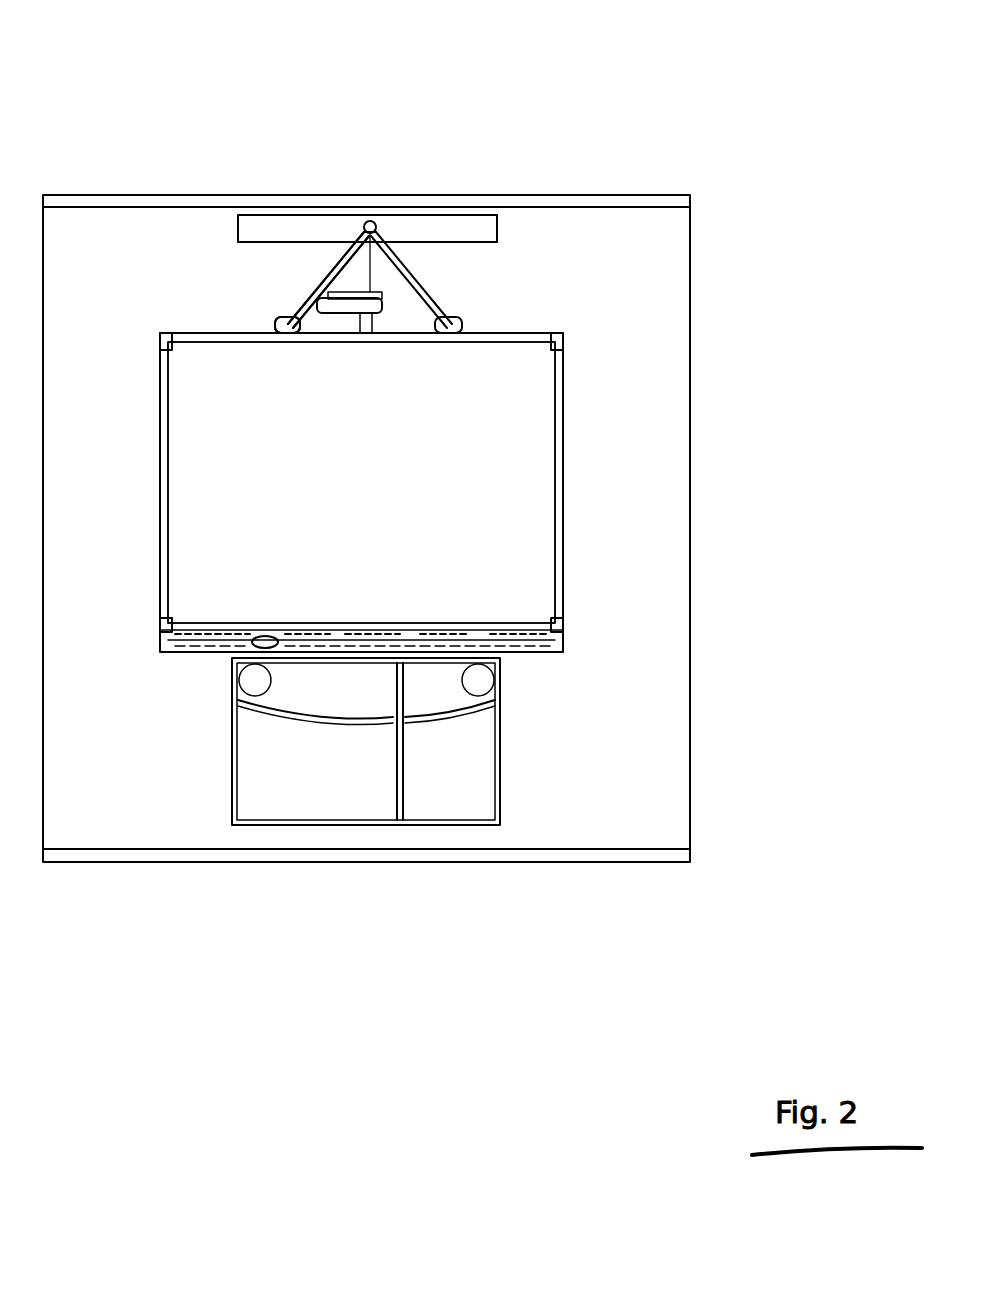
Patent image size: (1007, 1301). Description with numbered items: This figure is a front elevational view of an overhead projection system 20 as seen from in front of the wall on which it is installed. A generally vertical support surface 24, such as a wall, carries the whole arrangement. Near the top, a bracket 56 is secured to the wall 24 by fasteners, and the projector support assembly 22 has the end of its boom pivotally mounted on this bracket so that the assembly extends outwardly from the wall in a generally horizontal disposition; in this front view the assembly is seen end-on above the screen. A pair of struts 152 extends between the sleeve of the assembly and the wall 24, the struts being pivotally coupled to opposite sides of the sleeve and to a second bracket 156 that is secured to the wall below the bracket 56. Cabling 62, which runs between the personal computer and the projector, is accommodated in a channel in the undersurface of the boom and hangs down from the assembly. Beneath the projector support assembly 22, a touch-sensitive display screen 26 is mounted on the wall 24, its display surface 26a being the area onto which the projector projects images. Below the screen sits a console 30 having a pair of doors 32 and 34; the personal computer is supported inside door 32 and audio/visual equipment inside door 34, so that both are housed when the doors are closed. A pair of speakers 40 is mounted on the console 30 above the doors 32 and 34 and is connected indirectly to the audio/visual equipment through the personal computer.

The overhead projection system 20 is at (503, 139).
The projector support assembly 22 is at (457, 287).
The support surface 24 is at (672, 562).
The touch-sensitive display screen 26 is at (568, 456).
The display surface 26a is at (400, 482).
The console 30 is at (243, 828).
The door 32 is at (250, 752).
The door 34 is at (472, 766).
The speakers 40 is at (258, 683).
The bracket 56 is at (479, 226).
The cabling 62 is at (374, 333).
The struts 152 is at (335, 267).
The bracket 156 is at (275, 322).